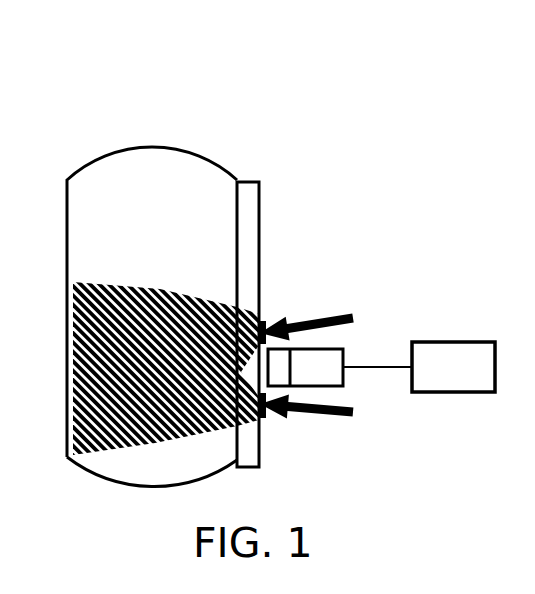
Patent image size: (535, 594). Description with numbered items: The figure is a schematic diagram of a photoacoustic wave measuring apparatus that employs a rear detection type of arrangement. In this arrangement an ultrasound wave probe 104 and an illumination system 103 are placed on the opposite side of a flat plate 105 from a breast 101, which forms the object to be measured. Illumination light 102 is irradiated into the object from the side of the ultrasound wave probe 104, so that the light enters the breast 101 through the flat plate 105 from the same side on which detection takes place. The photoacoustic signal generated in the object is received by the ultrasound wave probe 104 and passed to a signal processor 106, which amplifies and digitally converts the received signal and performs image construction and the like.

The breast 101 is at (177, 182).
The illumination light 102 is at (155, 287).
The illumination system 103 is at (353, 316).
The ultrasound wave probe 104 is at (315, 347).
The flat plate 105 is at (252, 182).
The signal processor 106 is at (419, 367).